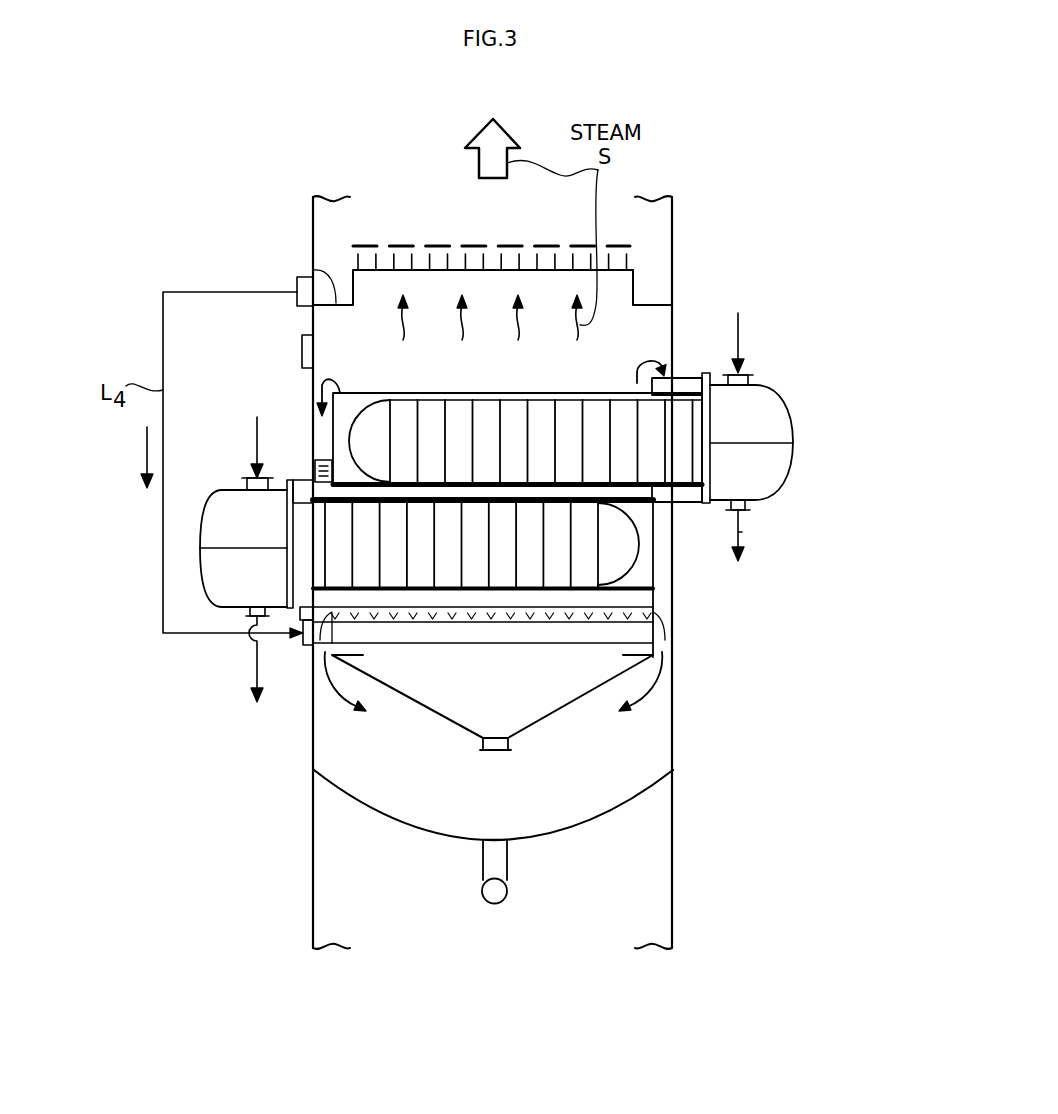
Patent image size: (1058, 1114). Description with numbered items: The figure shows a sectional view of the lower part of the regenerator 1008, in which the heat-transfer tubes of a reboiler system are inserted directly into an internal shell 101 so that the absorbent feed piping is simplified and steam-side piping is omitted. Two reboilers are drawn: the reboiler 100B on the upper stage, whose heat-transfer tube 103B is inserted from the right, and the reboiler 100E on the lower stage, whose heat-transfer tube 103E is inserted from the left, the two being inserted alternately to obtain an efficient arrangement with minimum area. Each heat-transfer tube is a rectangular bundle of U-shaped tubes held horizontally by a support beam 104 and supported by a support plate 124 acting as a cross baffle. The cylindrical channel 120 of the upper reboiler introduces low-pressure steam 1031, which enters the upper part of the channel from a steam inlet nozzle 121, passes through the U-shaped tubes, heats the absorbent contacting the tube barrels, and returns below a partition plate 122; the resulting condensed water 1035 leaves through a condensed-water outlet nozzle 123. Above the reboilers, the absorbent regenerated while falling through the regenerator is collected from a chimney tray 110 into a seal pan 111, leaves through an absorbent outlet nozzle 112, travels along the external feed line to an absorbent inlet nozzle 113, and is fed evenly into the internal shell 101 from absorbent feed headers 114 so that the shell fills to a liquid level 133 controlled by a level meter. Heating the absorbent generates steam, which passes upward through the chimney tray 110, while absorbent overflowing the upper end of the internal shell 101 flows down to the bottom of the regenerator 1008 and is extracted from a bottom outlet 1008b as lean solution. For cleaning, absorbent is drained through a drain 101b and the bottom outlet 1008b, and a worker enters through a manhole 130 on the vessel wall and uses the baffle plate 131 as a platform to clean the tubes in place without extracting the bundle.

The regenerator 1008 is at (673, 230).
The bottom outlet 1008b is at (507, 890).
The chimney tray 110 is at (403, 245).
The baffle plate 131 is at (451, 393).
The seal pan 111 is at (313, 270).
The absorbent outlet nozzle 112 is at (297, 300).
The manhole 130 is at (302, 350).
The heat-transfer tube 103B is at (371, 400).
The liquid level 133 is at (323, 462).
The support plate 124 is at (580, 420).
The reboiler 100B is at (806, 442).
The channel 120 is at (793, 468).
The partition plate 122 is at (770, 442).
The steam inlet nozzle 121 is at (750, 378).
The condensed-water outlet nozzle 123 is at (747, 505).
The reboiler 100E is at (197, 563).
The low-pressure steam 1031 is at (740, 338).
The condensed water 1035 is at (742, 532).
The heat-transfer tube 103E is at (544, 578).
The support beam 104 is at (657, 503).
The absorbent feed header 114 is at (500, 643).
The absorbent inlet nozzle 113 is at (310, 646).
The internal shell 101 is at (417, 717).
The drain 101b is at (508, 747).